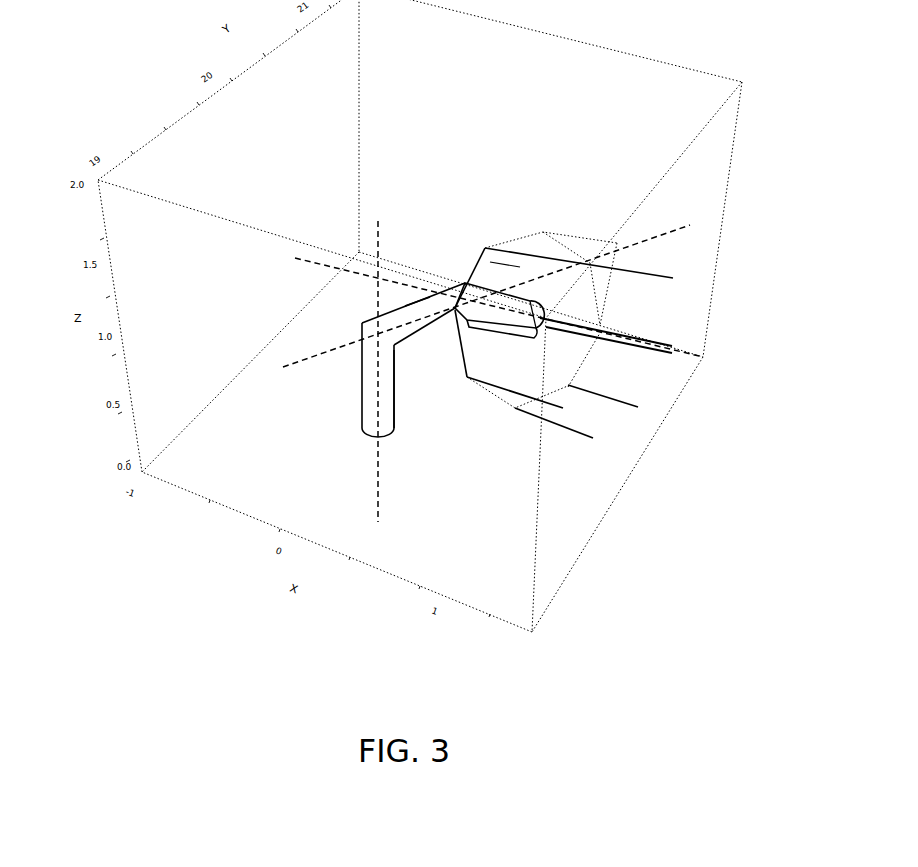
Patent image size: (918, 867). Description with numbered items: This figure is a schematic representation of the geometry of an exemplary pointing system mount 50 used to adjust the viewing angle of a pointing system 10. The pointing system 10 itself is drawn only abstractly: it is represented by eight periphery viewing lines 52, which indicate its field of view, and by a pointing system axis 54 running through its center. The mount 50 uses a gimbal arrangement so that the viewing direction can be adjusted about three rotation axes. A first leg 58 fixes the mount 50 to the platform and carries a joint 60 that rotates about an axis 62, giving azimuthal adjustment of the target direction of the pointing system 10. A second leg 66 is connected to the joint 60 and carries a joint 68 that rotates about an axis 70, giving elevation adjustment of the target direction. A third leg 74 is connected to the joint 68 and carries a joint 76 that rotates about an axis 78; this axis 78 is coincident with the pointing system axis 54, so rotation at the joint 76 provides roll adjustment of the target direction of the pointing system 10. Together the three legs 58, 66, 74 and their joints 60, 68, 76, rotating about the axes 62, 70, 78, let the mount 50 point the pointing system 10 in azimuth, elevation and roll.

The pointing system 10 is at (623, 405).
The pointing system mount 50 is at (396, 408).
The periphery viewing lines 52 is at (570, 428).
The pointing system axis 54 is at (588, 338).
The first leg 58 is at (368, 407).
The joint 60 is at (394, 345).
The axis 62 is at (380, 497).
The second leg 66 is at (411, 314).
The joint 68 is at (466, 282).
The axis 70 is at (670, 228).
The third leg 74 is at (503, 298).
The joint 76 is at (540, 308).
The axis 78 is at (311, 262).